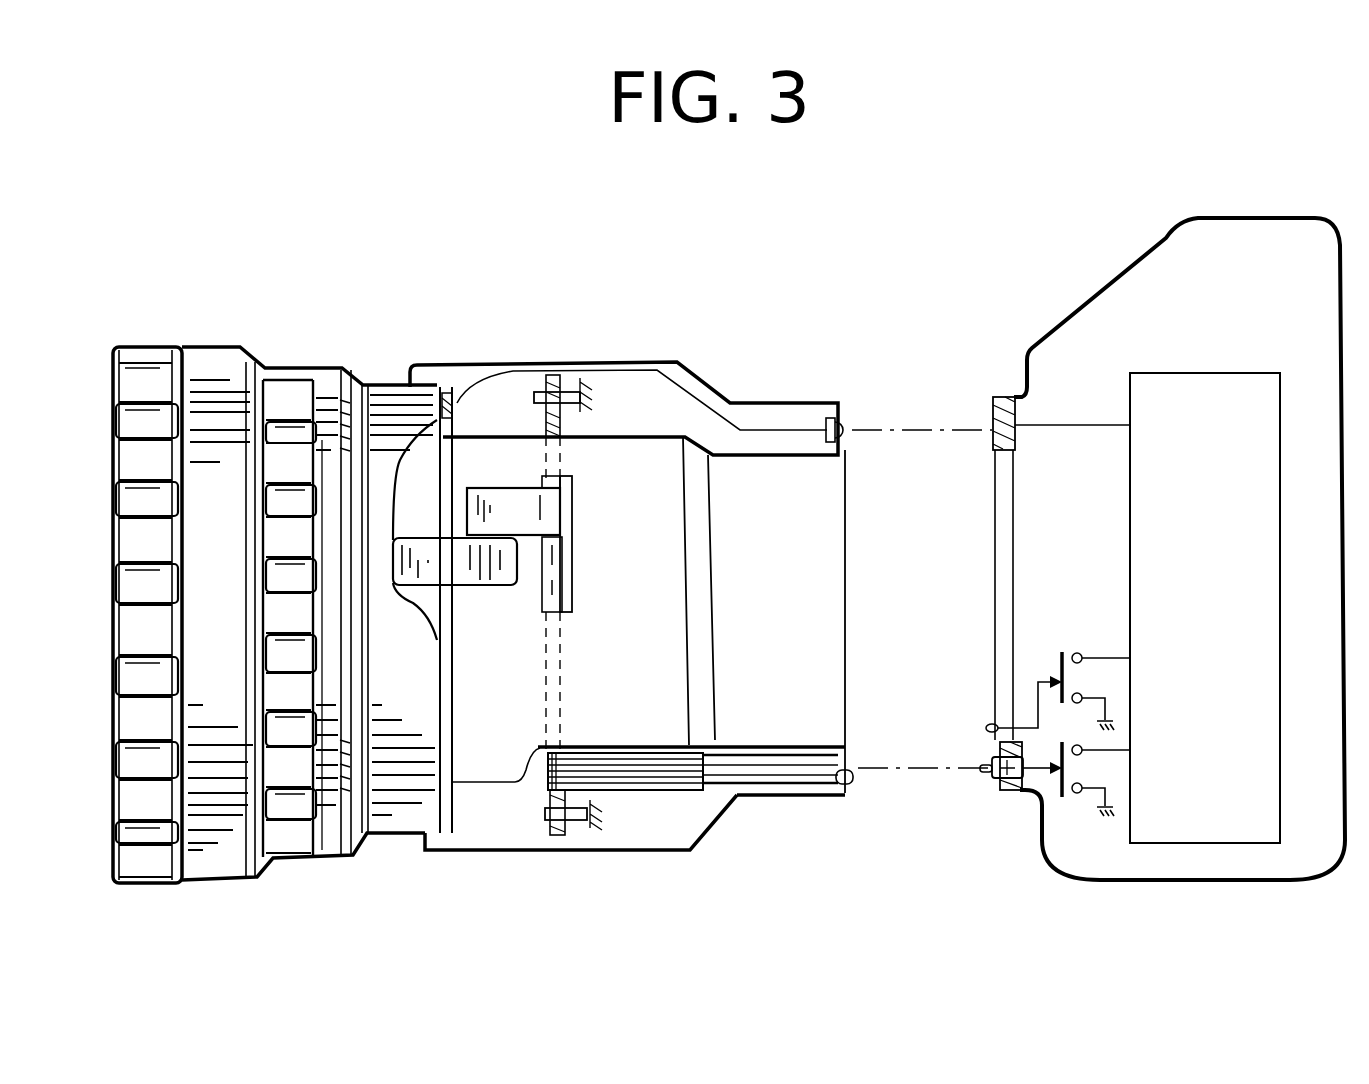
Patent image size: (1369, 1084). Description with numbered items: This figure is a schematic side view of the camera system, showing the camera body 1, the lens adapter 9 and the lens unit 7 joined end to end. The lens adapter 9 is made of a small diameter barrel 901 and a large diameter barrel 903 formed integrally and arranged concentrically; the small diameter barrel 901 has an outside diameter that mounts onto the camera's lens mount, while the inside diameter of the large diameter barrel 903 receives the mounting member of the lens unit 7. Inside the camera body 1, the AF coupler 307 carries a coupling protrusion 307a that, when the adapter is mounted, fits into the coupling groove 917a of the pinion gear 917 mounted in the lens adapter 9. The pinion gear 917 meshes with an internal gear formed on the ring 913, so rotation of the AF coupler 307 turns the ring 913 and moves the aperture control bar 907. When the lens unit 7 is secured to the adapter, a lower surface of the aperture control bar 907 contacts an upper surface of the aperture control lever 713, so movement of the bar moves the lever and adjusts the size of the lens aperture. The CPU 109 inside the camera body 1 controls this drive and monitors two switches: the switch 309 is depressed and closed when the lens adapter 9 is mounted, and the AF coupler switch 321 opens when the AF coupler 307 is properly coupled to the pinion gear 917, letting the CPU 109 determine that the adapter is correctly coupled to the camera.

The camera body 1 is at (1083, 295).
The lens unit 7 is at (222, 332).
The lens adapter 9 is at (772, 384).
The CPU 109 is at (1250, 338).
The AF coupler 307 is at (995, 783).
The coupling protrusion 307a is at (988, 756).
The switch 309 is at (1052, 665).
The AF coupler switch 321 is at (1052, 785).
The aperture control lever 713 is at (477, 570).
The small diameter barrel 901 is at (783, 800).
The large diameter barrel 903 is at (583, 856).
The aperture control bar 907 is at (547, 513).
The ring 913 is at (548, 395).
The pinion gear 917 is at (653, 765).
The coupling groove 917a is at (858, 767).